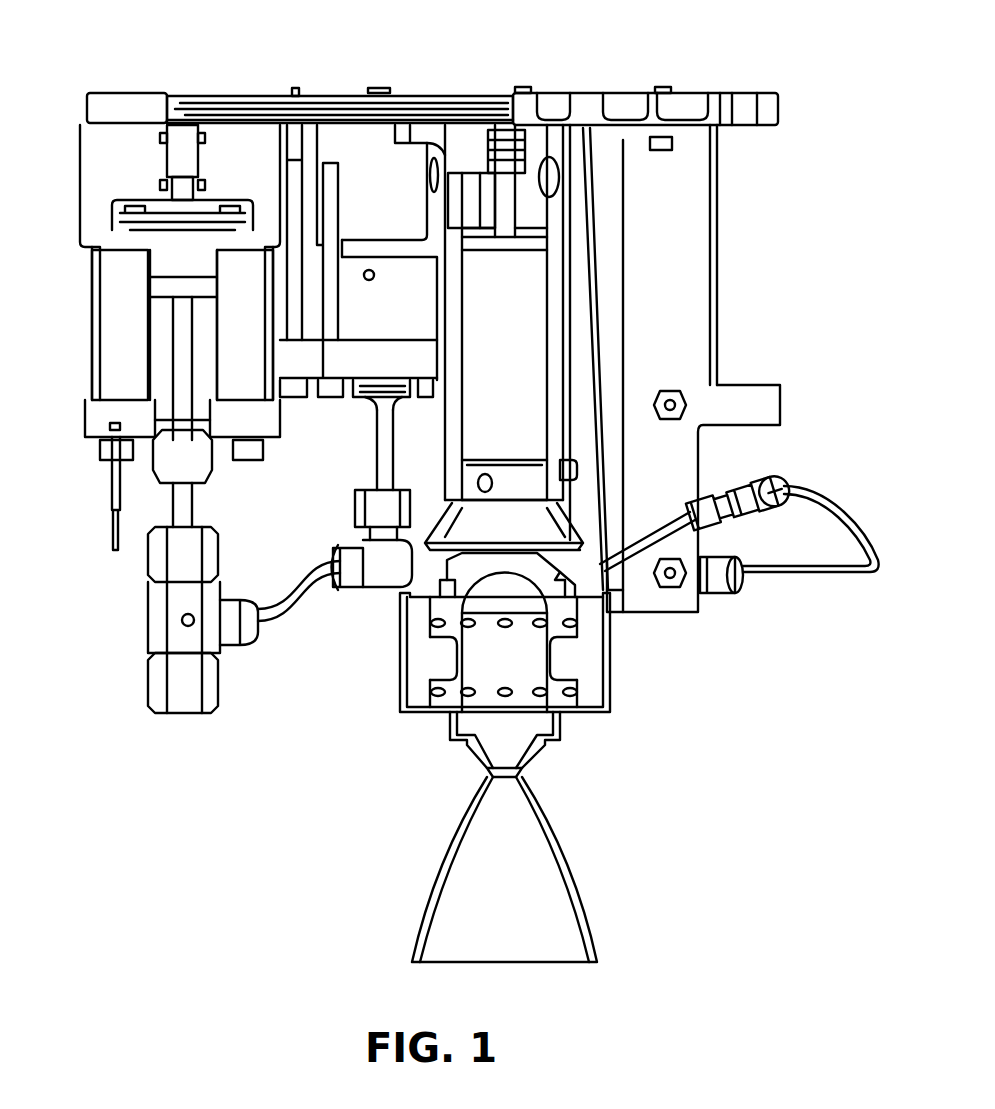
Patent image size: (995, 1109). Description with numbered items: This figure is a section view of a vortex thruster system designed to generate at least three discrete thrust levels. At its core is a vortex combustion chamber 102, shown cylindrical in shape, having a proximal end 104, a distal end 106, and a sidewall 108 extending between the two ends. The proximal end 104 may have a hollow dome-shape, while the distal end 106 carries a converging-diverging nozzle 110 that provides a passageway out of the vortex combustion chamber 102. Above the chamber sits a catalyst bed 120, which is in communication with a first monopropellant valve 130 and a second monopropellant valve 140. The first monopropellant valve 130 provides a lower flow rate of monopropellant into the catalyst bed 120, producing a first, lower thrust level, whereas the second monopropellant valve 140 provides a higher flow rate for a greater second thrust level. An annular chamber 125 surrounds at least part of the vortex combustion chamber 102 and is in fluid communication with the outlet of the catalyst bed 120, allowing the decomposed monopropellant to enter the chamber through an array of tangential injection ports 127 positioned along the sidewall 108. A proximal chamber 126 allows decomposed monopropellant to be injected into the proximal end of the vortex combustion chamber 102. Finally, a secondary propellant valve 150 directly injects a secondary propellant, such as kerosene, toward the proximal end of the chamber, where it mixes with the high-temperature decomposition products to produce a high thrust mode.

The vortex combustion chamber 102 is at (533, 640).
The proximal end 104 is at (492, 595).
The distal end 106 is at (470, 747).
The sidewall 108 is at (477, 680).
The converging-diverging nozzle 110 is at (535, 892).
The catalyst bed 120 is at (505, 322).
The annular chamber 125 is at (437, 667).
The proximal chamber 126 is at (535, 530).
The tangential injection ports 127 is at (577, 762).
The first monopropellant valve 130 is at (381, 213).
The second monopropellant valve 140 is at (158, 332).
The secondary propellant valve 150 is at (690, 508).